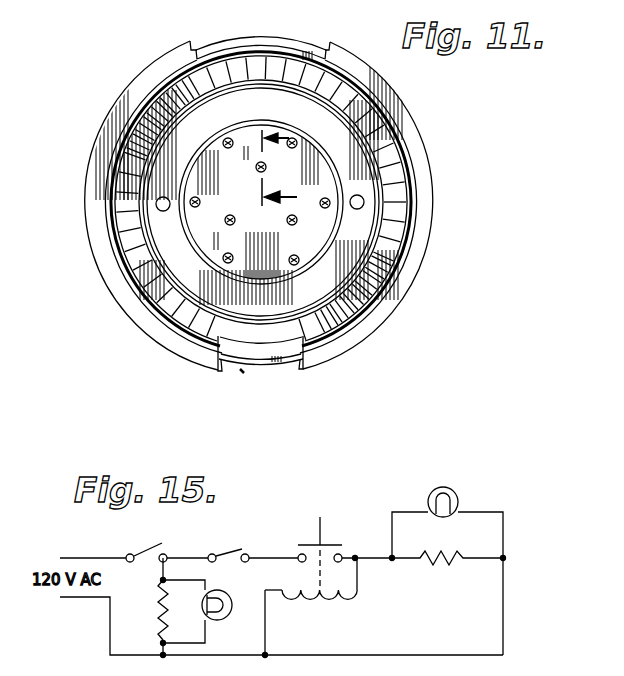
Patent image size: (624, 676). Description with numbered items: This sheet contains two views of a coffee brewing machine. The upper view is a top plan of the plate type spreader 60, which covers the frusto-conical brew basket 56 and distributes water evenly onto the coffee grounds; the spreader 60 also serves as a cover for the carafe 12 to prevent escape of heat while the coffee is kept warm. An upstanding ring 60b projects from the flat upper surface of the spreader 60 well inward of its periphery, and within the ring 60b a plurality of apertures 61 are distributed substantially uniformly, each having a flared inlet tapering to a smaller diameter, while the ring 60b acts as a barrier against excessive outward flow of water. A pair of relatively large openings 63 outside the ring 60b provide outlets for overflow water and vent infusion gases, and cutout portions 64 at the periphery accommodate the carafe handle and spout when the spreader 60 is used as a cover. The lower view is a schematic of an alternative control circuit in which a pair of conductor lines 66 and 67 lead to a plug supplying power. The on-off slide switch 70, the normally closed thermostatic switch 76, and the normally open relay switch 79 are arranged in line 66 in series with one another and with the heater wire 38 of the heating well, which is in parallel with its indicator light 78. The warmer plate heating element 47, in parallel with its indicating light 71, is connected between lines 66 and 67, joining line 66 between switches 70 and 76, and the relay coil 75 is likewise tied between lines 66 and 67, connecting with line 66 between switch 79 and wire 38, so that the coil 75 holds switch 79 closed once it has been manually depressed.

In FIG. 11, the spreader 60 is at (428, 132).
In FIG. 11, the upstanding ring 60b is at (306, 108).
In FIG. 11, the apertures 61 is at (322, 210).
In FIG. 11, the openings 63 is at (165, 211).
In FIG. 11, the cutout portions 64 is at (254, 31).
In FIG. 11, the brew basket 56 is at (243, 373).
In FIG. 11, the carafe 12 is at (262, 168).
In FIG. 15, the conductor line 66 is at (86, 556).
In FIG. 15, the on-off slide switch 70 is at (142, 553).
In FIG. 15, the thermostatic switch 76 is at (223, 552).
In FIG. 15, the relay switch 79 is at (332, 544).
In FIG. 15, the relay coil 75 is at (352, 600).
In FIG. 15, the indicator light 78 is at (459, 498).
In FIG. 15, the heater wire 38 is at (440, 568).
In FIG. 15, the indicating light 71 is at (226, 616).
In FIG. 15, the heating element 47 is at (160, 622).
In FIG. 15, the conductor line 67 is at (110, 623).